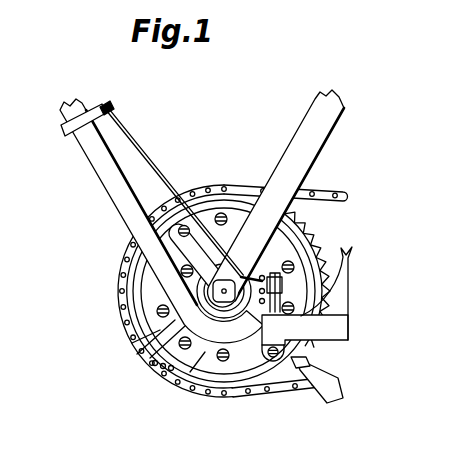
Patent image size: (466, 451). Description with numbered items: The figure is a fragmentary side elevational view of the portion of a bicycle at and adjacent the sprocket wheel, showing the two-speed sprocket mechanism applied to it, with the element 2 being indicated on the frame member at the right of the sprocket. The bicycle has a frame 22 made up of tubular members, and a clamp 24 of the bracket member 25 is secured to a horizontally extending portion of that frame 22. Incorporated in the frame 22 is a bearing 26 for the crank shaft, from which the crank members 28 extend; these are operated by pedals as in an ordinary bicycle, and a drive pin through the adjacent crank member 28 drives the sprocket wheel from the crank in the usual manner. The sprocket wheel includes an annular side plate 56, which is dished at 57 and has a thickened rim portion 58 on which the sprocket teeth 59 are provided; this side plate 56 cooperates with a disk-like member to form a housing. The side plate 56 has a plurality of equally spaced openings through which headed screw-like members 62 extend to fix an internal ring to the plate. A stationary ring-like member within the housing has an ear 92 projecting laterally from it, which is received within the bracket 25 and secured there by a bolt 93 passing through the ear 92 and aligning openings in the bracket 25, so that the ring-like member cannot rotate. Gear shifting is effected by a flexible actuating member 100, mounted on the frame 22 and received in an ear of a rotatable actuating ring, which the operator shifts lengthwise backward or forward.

The bicycle frame member 2 is at (347, 256).
The frame 22 is at (117, 186).
The clamp 24 is at (300, 342).
The bracket member 25 is at (284, 286).
The bearing 26 is at (132, 343).
The crank member 28 is at (185, 245).
The annular side plate 56 is at (150, 358).
The dished portion 57 is at (137, 354).
The thickened rim portion 58 is at (223, 190).
The sprocket teeth 59 is at (302, 366).
The headed screw-like members 62 is at (238, 387).
The ear 92 is at (304, 230).
The bolt 93 is at (190, 372).
The flexible actuating member 100 is at (151, 168).